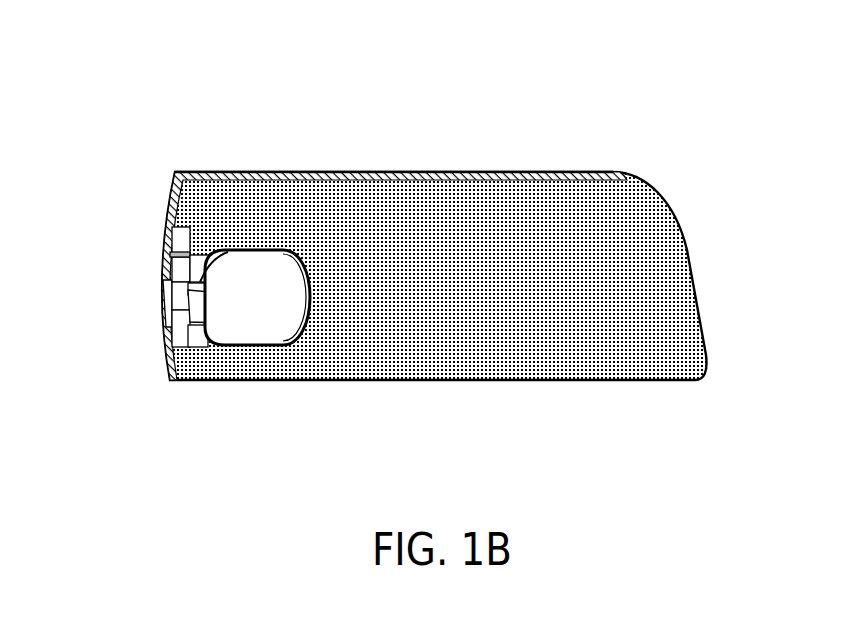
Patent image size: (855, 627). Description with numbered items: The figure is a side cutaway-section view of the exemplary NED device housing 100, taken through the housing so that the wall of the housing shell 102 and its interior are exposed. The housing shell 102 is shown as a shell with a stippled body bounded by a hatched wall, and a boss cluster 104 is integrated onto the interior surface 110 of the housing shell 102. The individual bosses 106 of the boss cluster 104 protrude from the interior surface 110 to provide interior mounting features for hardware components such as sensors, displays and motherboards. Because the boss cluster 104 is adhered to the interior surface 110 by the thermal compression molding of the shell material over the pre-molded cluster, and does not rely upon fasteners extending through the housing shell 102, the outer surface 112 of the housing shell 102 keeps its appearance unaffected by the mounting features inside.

The NED device housing 100 is at (157, 114).
The housing shell 102 is at (582, 170).
The boss cluster 104 is at (222, 287).
The boss 106 is at (195, 283).
The interior surface 110 is at (180, 363).
The outer surface 112 is at (160, 257).